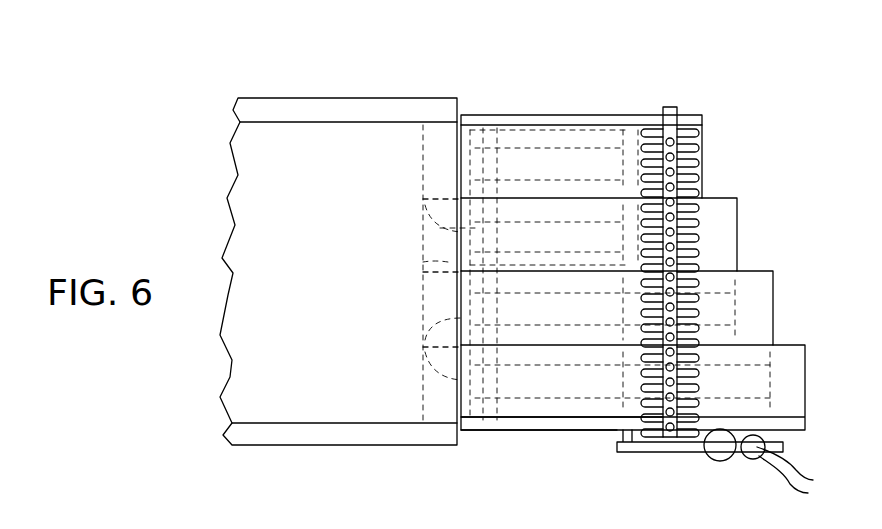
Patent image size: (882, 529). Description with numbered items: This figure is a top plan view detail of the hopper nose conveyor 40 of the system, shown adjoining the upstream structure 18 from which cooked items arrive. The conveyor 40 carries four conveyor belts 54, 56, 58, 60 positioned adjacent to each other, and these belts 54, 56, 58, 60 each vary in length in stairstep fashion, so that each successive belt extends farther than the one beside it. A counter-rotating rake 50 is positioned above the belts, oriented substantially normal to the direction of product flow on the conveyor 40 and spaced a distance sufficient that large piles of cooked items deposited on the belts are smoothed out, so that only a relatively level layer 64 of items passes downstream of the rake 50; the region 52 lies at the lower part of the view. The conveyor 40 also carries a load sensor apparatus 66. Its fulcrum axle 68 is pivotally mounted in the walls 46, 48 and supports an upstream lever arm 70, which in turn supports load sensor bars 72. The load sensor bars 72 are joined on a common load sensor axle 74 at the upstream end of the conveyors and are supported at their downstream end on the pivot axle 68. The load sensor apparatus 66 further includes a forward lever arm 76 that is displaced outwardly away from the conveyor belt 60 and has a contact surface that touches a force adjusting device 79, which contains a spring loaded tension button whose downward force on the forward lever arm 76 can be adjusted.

The main housing 18 is at (374, 112).
The hopper nose conveyor 40 is at (548, 111).
The wall 46 is at (525, 431).
The wall 48 is at (492, 115).
The counter-rotating rake 50 is at (670, 118).
The lower member 52 is at (371, 526).
The conveyor belt 54 is at (702, 151).
The conveyor belt 56 is at (737, 231).
The conveyor belt 58 is at (773, 304).
The conveyor belt 60 is at (805, 385).
The level layer 64 is at (439, 526).
The load sensor apparatus 66 is at (628, 454).
The fulcrum axle 68 is at (628, 418).
The upstream lever arm 70 is at (520, 114).
The load sensor bars 72 is at (423, 199).
The load sensor axle 74 is at (423, 270).
The forward lever arm 76 is at (727, 460).
The force adjusting device 79 is at (755, 458).